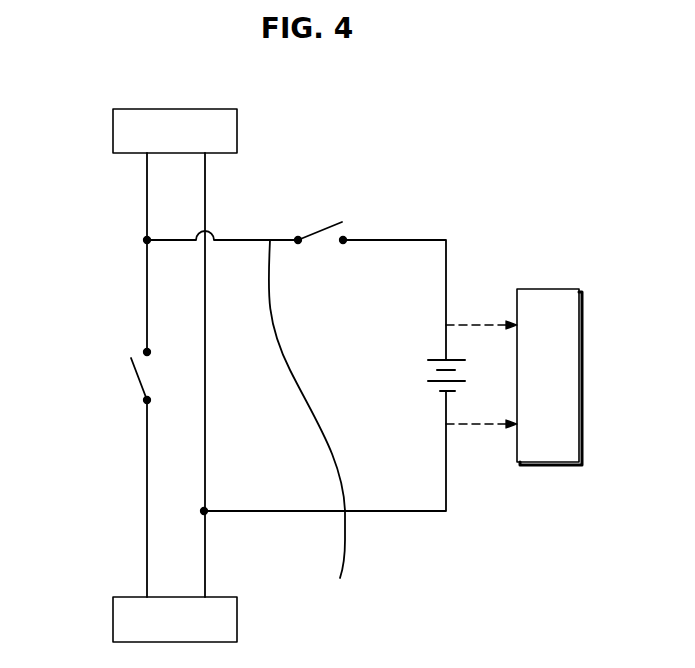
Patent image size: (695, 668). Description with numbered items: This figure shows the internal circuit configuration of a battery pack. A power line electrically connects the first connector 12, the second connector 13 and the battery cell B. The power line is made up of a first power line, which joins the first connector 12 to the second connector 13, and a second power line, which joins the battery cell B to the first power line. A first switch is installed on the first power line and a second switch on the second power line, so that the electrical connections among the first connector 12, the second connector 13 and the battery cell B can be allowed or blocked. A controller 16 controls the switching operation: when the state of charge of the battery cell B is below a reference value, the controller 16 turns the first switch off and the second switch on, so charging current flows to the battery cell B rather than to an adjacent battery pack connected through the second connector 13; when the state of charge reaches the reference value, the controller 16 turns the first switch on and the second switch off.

The first connector 12 is at (237, 131).
The second connector 13 is at (237, 617).
The controller 16 is at (565, 289).
The battery cell B is at (428, 360).